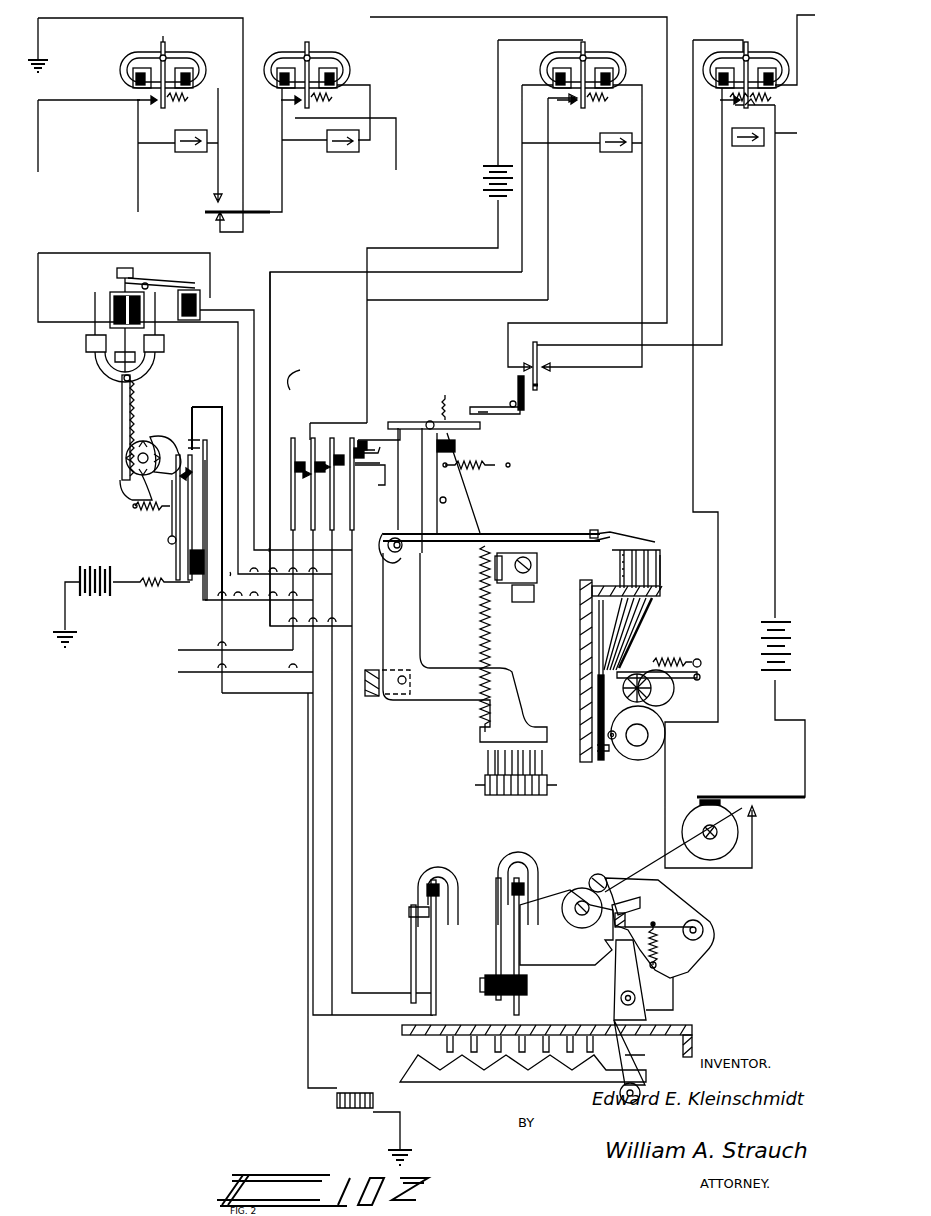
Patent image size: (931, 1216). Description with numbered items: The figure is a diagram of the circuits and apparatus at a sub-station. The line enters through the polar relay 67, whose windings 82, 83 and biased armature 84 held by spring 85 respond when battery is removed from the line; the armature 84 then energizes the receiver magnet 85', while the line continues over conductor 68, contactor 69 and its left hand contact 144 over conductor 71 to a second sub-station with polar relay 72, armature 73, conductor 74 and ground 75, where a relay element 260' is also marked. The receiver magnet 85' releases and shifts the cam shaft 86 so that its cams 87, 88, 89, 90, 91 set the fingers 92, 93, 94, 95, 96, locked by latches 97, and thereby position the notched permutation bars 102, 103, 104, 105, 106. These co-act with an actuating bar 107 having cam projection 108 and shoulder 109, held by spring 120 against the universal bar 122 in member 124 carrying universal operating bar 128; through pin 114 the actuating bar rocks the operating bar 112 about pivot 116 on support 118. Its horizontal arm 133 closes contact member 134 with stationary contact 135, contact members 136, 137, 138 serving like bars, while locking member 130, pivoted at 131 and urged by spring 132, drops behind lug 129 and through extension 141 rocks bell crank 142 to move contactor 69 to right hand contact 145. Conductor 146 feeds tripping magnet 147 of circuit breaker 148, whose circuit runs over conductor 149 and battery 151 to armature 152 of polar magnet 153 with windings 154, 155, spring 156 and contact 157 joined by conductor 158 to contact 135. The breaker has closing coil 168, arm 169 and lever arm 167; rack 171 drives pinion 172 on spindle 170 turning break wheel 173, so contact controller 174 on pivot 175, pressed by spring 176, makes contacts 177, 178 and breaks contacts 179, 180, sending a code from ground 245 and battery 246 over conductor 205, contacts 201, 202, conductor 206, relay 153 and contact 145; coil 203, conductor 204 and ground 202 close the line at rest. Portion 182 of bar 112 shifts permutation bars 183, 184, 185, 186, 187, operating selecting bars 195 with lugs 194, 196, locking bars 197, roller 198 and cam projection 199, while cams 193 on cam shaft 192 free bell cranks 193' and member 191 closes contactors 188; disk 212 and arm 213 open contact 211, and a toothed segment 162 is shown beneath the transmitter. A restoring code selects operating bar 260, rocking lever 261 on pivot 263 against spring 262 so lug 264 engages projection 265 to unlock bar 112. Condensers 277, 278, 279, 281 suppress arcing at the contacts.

The conductor 74 is at (245, 37).
The ground 75 is at (50, 66).
The armature pivot 260' is at (192, 42).
The condenser 281 is at (192, 153).
The armature 73 is at (253, 207).
The polar relay 72 is at (316, 59).
The condenser 279 is at (344, 153).
The winding 154 is at (540, 74).
The polar or operating magnet 153 is at (575, 63).
The armature 152 is at (590, 54).
The winding 155 is at (611, 70).
The contact 157 is at (565, 104).
The spring 156 is at (605, 98).
The condenser 278 is at (616, 152).
The battery 151 is at (490, 183).
The conductor 149 is at (413, 240).
The conductor 158 is at (548, 244).
The winding 82 is at (725, 70).
The polar relay 67 is at (749, 68).
The winding 83 is at (776, 86).
The spring 85 is at (728, 115).
The armature 84 is at (776, 134).
The condenser 277 is at (750, 148).
The conductor 68 is at (722, 270).
The conductor 71 is at (592, 318).
The circuit breaker 148 is at (189, 355).
The closing coil 168 is at (110, 300).
The pivoted lever arm 167 is at (150, 283).
The tripping magnet 147 is at (200, 305).
The arm 169 is at (105, 358).
The conductor 146 is at (272, 357).
The toothed rack 171 is at (135, 403).
The pinion 172 is at (145, 441).
The cammed disk or break wheel 173 is at (170, 450).
The spindle 170 is at (120, 478).
The contact controller 174 is at (172, 486).
The spring 176 is at (168, 543).
The contact 180 is at (198, 407).
The contact 179 is at (205, 440).
The contact 177 is at (200, 468).
The contact 178 is at (210, 480).
The pivot 175 is at (151, 571).
The battery 246 is at (84, 570).
The ground 245 is at (79, 646).
The coil 203 is at (378, 1088).
The conductor 204 is at (312, 1062).
The ground / contact 202 is at (410, 1150).
The conductor 205 is at (334, 915).
The conductor 206 is at (356, 840).
The contact member 138 is at (292, 485).
The contact member 137 is at (310, 454).
The contact member 136 is at (330, 422).
The contact member 134 is at (348, 426).
The stationary contact 135 is at (359, 404).
The horizontal arm 133 is at (370, 475).
The lug 129 is at (398, 412).
The locking member 130 is at (423, 419).
The pivot 131 is at (430, 421).
The spring 132 is at (457, 411).
The extension 141 is at (487, 425).
The bell crank 142 is at (525, 425).
The armature / contactor 69 is at (523, 403).
The left hand contact 144 is at (528, 372).
The right hand contact 145 is at (569, 353).
The lug 264 is at (468, 449).
The spring 262 is at (510, 466).
The pivot 263 is at (458, 496).
The lever arm 261 is at (458, 528).
The projection 265 is at (412, 492).
The pin 114 is at (395, 515).
The circuit selecting bar / operating bar 112 is at (383, 585).
The pivot 116 is at (420, 660).
The support 118 is at (372, 700).
The downwardly extending portion 182 is at (515, 712).
The cam projection 108 is at (512, 532).
The shoulder 109 is at (495, 522).
The operating bar 260 is at (601, 523).
The actuating bar 107 is at (590, 530).
The notched permutation bar 102 is at (618, 548).
The notched permutation bar 103 is at (634, 548).
The notched permutation bar 104 is at (648, 548).
The notched permutation bar 105 is at (660, 552).
The notched permutation bar 106 is at (665, 582).
The member 124 is at (540, 566).
The universal bar 122 is at (538, 584).
The spring 120 is at (496, 656).
The universal operating bar 128 is at (480, 588).
The cam 91 is at (580, 705).
The finger 92 is at (648, 600).
The finger 93 is at (652, 608).
The finger 94 is at (654, 618).
The finger 95 is at (662, 623).
The finger 96 is at (654, 637).
The cam shaft 86 is at (636, 690).
The cam 90 is at (637, 675).
The cam 89 is at (672, 653).
The cam 88 is at (659, 676).
The cam 87 is at (670, 692).
The receiver magnet 85' is at (658, 733).
The cammed permutation bar 186 is at (596, 742).
The cammed permutation bar 183 is at (482, 778).
The cammed permutation bar 184 is at (490, 762).
The cammed permutation bar 185 is at (485, 748).
The cammed permutation bar 187 is at (550, 770).
The contact engaging arm 213 is at (740, 795).
The contact / line 211 is at (770, 800).
The cam / disk 212 is at (735, 836).
The cam projection 199 is at (652, 888).
The latch 97 is at (757, 647).
The contactor 188 is at (485, 887).
The switch actuating member 191 is at (515, 860).
The contact 201 is at (411, 910).
The bell crank 193' is at (530, 985).
The cam 193 is at (566, 917).
The cam shaft 192 is at (565, 889).
The roller 198 is at (600, 874).
The locking bar 197 is at (683, 925).
The lug 196 is at (690, 955).
The lug 194 is at (618, 982).
The selecting bar 195 is at (650, 1015).
The rack segment 162 is at (567, 1076).